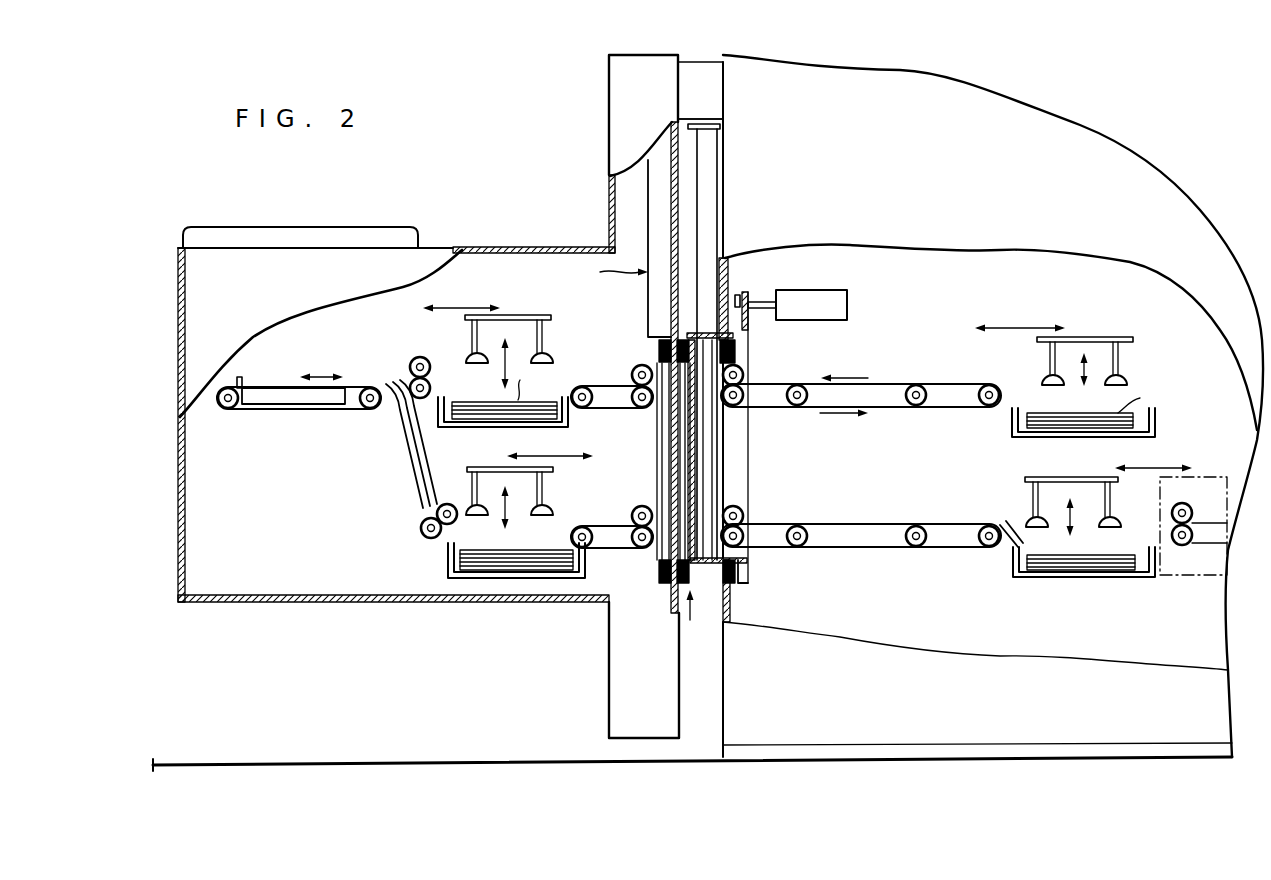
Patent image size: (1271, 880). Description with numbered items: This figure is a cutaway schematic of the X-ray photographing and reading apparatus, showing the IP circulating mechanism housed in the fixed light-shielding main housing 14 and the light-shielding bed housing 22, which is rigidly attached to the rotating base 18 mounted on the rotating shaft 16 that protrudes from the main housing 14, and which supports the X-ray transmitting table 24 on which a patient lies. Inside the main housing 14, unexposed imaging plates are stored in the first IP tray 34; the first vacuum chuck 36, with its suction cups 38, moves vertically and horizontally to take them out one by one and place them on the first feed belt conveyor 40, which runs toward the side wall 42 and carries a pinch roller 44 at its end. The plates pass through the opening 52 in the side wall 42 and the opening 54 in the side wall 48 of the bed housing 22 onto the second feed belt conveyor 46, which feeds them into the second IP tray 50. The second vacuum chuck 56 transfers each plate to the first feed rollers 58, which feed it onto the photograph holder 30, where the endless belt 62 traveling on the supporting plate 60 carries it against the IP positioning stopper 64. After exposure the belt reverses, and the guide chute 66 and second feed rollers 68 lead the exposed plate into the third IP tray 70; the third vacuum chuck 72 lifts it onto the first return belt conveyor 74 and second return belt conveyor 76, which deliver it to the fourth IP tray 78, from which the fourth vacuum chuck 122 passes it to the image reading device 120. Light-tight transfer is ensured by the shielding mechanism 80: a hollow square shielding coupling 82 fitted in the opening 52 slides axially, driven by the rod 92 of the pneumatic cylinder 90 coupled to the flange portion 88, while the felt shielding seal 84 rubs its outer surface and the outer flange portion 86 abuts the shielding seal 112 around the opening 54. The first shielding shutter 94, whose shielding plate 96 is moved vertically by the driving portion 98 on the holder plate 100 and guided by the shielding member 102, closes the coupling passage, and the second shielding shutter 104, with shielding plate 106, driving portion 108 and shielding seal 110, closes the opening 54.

The main housing 14 is at (1062, 150).
The rotating shaft 16 is at (706, 62).
The rotating base 18 is at (609, 126).
The bed housing 22 is at (498, 247).
The X-ray transmitting table 24 is at (283, 227).
The photograph holder 30 is at (273, 422).
The first IP tray 34 is at (1155, 418).
The first vacuum chuck 36 is at (1093, 337).
The suction cups 38 is at (466, 356).
The first feed belt conveyor 40 is at (893, 384).
The side wall 42 is at (733, 610).
The pinch roller 44 is at (636, 368).
The second feed belt conveyor 46 is at (585, 388).
The side wall 48 is at (672, 600).
The second IP tray 50 is at (525, 427).
The opening 52 is at (742, 515).
The opening 54 is at (657, 425).
The second vacuum chuck 56 is at (518, 315).
The first feed rollers 58 is at (410, 368).
The supporting plate 60 is at (302, 390).
The endless belt 62 is at (345, 388).
The IP positioning stopper 64 is at (242, 380).
The guide chute 66 is at (410, 464).
The second feed rollers 68 is at (421, 528).
The third IP tray 70 is at (452, 565).
The third vacuum chuck 72 is at (470, 467).
The first return belt conveyor 74 is at (594, 526).
The second return belt conveyor 76 is at (873, 524).
The fourth IP tray 78 is at (1060, 577).
The shielding mechanism 80 is at (693, 622).
The shielding coupling 82 is at (700, 566).
The shielding seal 84 is at (745, 372).
The flange portion 86 is at (745, 345).
The flange portion 88 is at (752, 570).
The pneumatic cylinder 90 is at (826, 290).
The rod 92 is at (760, 302).
The first shielding shutter 94 is at (735, 193).
The shielding plate 96 is at (744, 462).
The driving portion 98 is at (710, 141).
The holder plate 100 is at (728, 262).
The shielding member 102 is at (742, 443).
The second shielding shutter 104 is at (601, 272).
The shielding plate 106 is at (657, 463).
The driving portion 108 is at (653, 201).
The shielding seal 110 is at (657, 345).
The shielding seal 112 is at (750, 331).
The image reading device 120 is at (1200, 477).
The fourth vacuum chuck 122 is at (1058, 477).